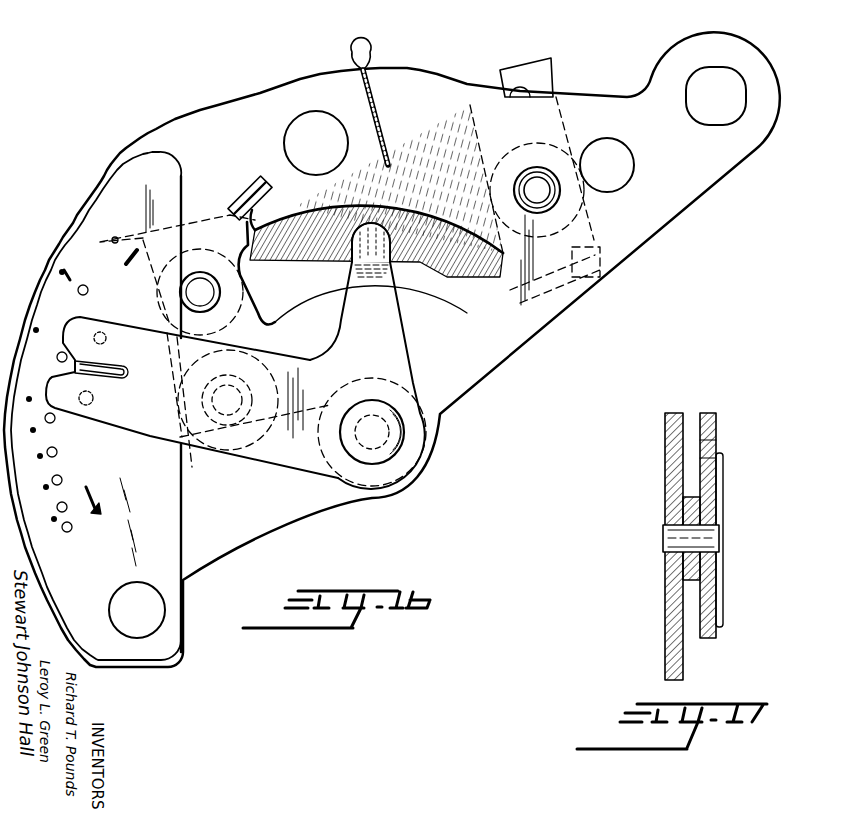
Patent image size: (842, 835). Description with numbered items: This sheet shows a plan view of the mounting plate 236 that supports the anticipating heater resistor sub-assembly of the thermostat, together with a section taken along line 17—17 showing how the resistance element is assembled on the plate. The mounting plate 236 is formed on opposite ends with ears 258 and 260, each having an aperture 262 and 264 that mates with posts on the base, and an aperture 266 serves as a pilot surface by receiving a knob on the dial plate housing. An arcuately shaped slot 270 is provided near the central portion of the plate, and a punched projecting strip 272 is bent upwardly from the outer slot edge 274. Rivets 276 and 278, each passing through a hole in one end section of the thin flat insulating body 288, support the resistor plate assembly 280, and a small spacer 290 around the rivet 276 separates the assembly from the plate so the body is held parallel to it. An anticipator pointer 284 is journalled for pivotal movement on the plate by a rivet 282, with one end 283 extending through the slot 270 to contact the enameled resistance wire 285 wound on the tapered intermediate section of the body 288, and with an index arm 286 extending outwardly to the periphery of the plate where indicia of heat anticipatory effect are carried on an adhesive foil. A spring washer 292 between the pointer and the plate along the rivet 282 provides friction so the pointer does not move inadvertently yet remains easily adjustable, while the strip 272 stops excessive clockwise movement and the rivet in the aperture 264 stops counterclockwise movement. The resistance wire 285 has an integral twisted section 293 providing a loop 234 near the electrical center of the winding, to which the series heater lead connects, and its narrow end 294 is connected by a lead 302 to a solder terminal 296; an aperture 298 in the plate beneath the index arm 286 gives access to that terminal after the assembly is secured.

In FIG. 16, the mounting plate 236 is at (597, 95).
In FIG. 17, the mounting plate 236 is at (665, 470).
In FIG. 16, the ear 260 is at (118, 661).
In FIG. 16, the aperture 264 is at (162, 612).
In FIG. 16, the ear 258 is at (770, 62).
In FIG. 16, the aperture 262 is at (746, 97).
In FIG. 16, the aperture 266 is at (634, 166).
In FIG. 16, the loop 234 is at (350, 54).
In FIG. 16, the twisted section 293 is at (382, 108).
In FIG. 16, the body 288 is at (528, 72).
In FIG. 17, the body 288 is at (709, 480).
In FIG. 16, the resistor plate assembly 280 is at (436, 132).
In FIG. 17, the resistor plate assembly 280 is at (723, 515).
In FIG. 16, the spring washer 292 is at (595, 248).
In FIG. 16, the rivet 276 is at (540, 168).
In FIG. 17, the rivet 276 is at (663, 538).
In FIG. 16, the resistance wire 285 is at (442, 262).
In FIG. 16, the outer slot edge 274 is at (313, 216).
In FIG. 16, the end of anticipator pointer 283 is at (354, 263).
In FIG. 16, the anticipator pointer 284 is at (400, 376).
In FIG. 16, the index arm 286 is at (147, 435).
In FIG. 16, the rivet 282 is at (385, 437).
In FIG. 16, the rivet 278 is at (200, 270).
In FIG. 16, the projecting strip 272 is at (244, 185).
In FIG. 16, the narrow end 294 is at (252, 258).
In FIG. 16, the arcuately shaped slot 270 is at (467, 314).
In FIG. 16, the lead 302 is at (262, 328).
In FIG. 16, the solder terminal 296 is at (216, 420).
In FIG. 16, the aperture 298 is at (234, 438).
In FIG. 17, the spacer 290 is at (697, 563).
In FIG. 16, the section line 17 is at (506, 57).